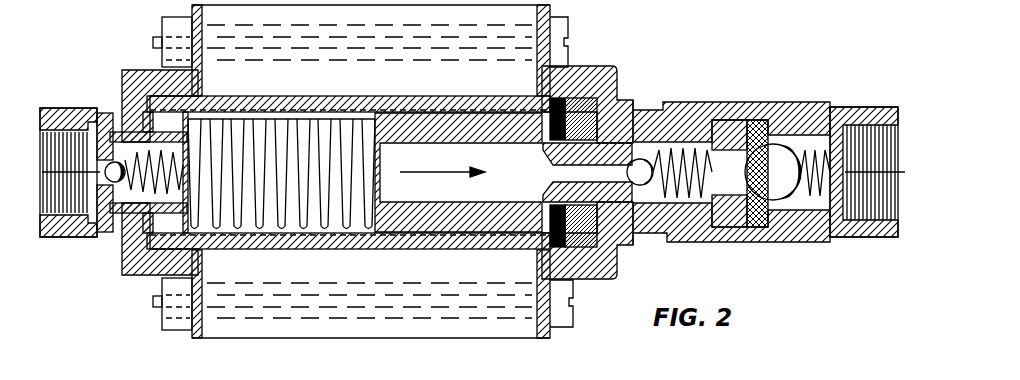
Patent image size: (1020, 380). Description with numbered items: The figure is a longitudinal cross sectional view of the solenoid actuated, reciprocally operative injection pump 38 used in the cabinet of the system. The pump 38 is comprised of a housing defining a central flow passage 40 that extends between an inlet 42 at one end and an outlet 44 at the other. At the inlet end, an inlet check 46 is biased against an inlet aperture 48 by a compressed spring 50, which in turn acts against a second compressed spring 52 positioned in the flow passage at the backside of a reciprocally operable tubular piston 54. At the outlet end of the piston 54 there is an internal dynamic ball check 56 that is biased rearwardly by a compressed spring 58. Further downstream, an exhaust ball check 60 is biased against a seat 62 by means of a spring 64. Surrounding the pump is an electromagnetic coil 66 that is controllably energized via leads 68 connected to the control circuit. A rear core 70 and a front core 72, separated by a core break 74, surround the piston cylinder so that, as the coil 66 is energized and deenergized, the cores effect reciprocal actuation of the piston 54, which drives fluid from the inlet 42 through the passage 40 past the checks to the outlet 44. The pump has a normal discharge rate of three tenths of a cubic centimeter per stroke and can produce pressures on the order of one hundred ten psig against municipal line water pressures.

The injection pump 38 is at (498, 151).
The central flow passage 40 is at (317, 223).
The inlet 42 is at (43, 107).
The outlet 44 is at (877, 105).
The inlet check 46 is at (112, 113).
The inlet aperture 48 is at (110, 200).
The compressed spring 50 is at (117, 235).
The compressed spring 52 is at (253, 100).
The tubular piston 54 is at (410, 110).
The internal dynamic ball check 56 is at (628, 148).
The compressed spring 58 is at (675, 150).
The exhaust ball check 60 is at (793, 220).
The seat 62 is at (778, 213).
The spring 64 is at (830, 233).
The electromagnetic coil 66 is at (347, 50).
The leads 68 is at (402, 327).
The rear core 70 is at (240, 250).
The front core 72 is at (480, 100).
The core break 74 is at (373, 250).